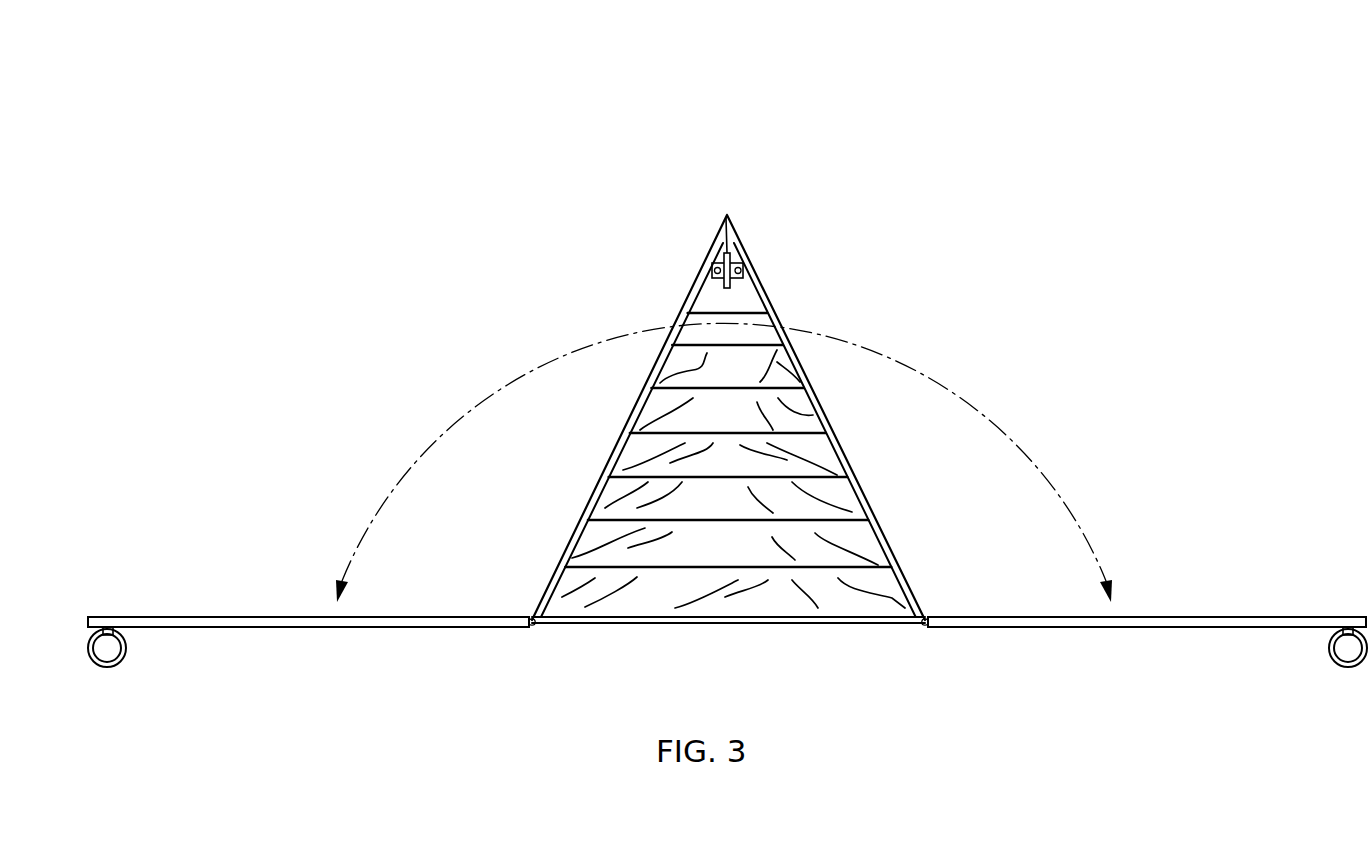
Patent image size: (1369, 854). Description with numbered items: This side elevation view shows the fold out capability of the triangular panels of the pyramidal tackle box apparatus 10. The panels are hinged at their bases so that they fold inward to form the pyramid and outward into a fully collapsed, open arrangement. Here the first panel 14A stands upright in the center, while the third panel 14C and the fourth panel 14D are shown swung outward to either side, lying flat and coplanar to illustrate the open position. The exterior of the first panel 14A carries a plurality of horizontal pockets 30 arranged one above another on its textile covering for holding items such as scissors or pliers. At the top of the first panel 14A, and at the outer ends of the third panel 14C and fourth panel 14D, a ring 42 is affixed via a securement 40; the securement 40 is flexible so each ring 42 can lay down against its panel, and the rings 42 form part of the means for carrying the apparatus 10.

The pyramidal tackle box apparatus 10 is at (850, 220).
The first panel 14A is at (782, 622).
The third panel 14C is at (317, 627).
The fourth panel 14D is at (1235, 617).
The horizontal pockets 30 is at (807, 412).
The securement 40 is at (743, 268).
The ring 42 is at (726, 216).